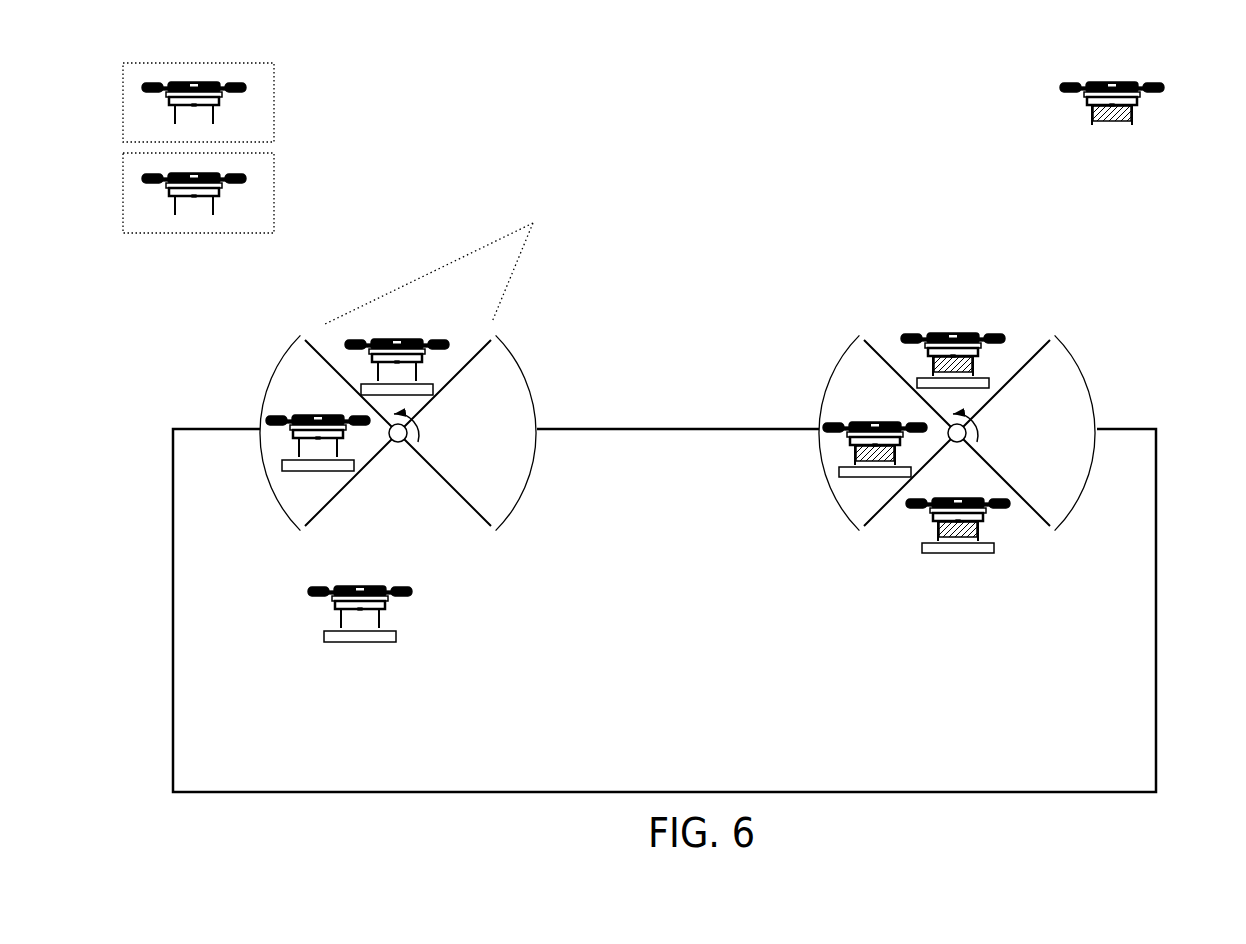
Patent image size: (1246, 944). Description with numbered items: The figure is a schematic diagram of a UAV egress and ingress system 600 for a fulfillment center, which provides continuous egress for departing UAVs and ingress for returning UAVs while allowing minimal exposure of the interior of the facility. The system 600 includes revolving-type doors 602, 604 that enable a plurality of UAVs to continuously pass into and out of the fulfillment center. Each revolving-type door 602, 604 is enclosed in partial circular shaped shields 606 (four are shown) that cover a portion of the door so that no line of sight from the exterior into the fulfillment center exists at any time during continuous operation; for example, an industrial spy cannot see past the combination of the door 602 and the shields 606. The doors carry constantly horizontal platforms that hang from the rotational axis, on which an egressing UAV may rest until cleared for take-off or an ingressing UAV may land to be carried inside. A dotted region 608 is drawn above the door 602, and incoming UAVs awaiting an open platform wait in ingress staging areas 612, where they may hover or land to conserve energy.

The UAV egress and ingress system 600 is at (1149, 232).
The revolving-type door 602 is at (434, 468).
The revolving-type door 604 is at (996, 468).
The shield 606 is at (285, 355).
The UAV approach / launch path 608 is at (535, 221).
The ingress staging area 612 is at (277, 156).